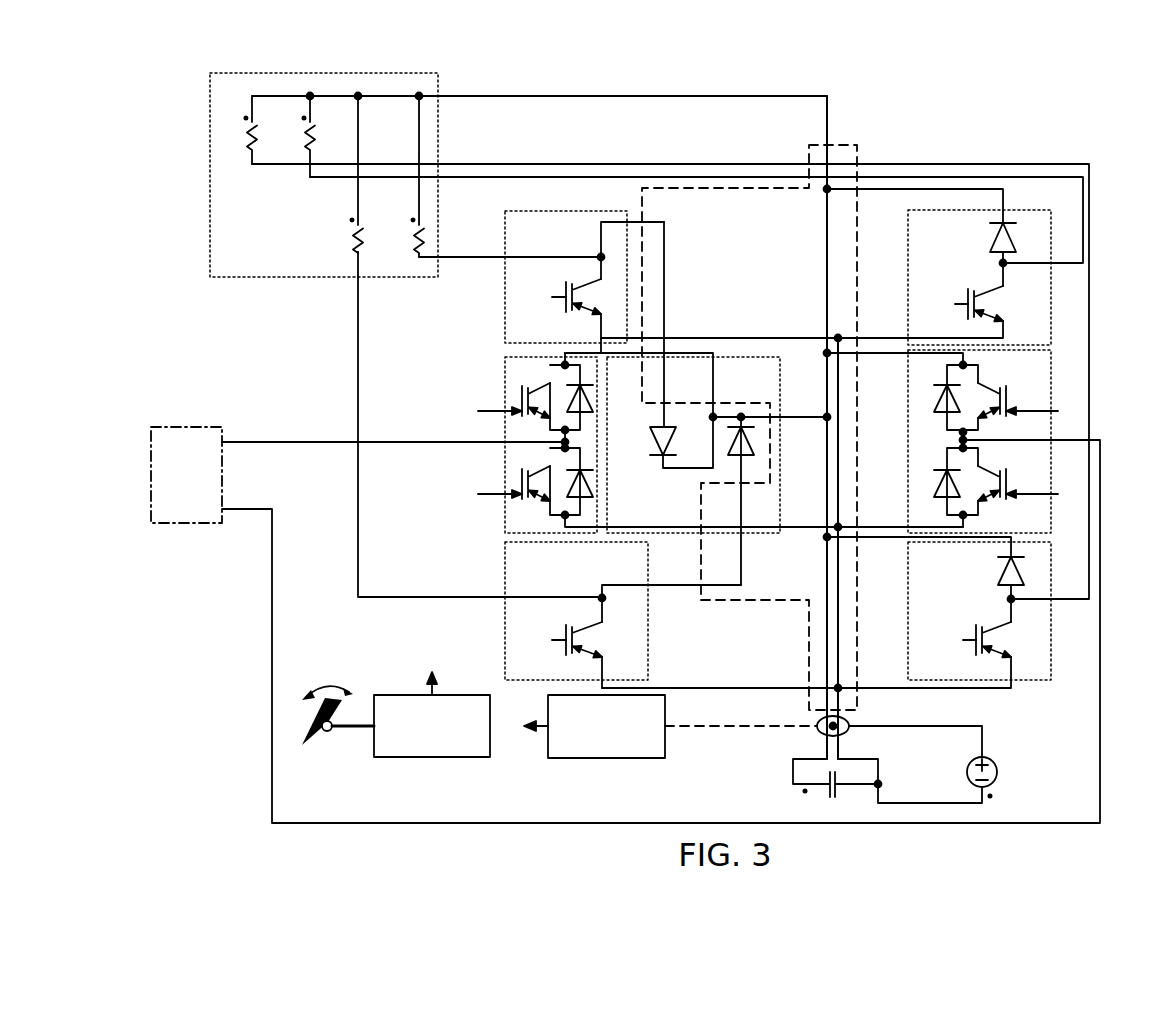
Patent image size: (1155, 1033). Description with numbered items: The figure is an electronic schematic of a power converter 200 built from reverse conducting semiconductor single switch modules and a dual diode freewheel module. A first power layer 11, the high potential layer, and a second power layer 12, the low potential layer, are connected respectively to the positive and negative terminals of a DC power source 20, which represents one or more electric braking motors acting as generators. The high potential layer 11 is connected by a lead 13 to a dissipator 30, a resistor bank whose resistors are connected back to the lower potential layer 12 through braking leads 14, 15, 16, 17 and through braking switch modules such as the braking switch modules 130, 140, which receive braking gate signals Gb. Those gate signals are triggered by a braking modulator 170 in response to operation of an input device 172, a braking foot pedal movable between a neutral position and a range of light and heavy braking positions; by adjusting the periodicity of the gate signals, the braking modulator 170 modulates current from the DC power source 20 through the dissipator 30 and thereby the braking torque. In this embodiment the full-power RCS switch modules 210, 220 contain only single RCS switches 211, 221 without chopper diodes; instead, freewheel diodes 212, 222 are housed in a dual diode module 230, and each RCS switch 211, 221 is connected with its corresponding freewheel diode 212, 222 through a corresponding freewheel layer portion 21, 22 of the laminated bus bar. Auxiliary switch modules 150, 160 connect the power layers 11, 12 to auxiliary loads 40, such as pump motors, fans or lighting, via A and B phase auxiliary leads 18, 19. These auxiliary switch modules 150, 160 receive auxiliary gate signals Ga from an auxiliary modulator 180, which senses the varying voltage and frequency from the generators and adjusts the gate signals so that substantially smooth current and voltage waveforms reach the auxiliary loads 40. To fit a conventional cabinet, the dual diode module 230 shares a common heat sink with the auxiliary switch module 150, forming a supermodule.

The power converter 200 is at (993, 92).
The dissipator 30 is at (208, 94).
The lead 13 is at (518, 95).
The braking lead 17 is at (470, 163).
The braking lead 16 is at (485, 178).
The braking lead 14 is at (452, 256).
The braking lead 15 is at (357, 530).
The A phase auxiliary lead 18 is at (248, 444).
The B phase auxiliary lead 19 is at (242, 511).
The auxiliary loads 40 is at (174, 489).
The full-power RCS switch module 210 is at (561, 239).
The RCS switch 211 is at (552, 282).
The freewheel layer portion 22 is at (667, 254).
The dual diode module 230 is at (698, 439).
The freewheel diode 212 is at (655, 462).
The freewheel diode 222 is at (748, 462).
The auxiliary switch module 150 is at (503, 357).
The auxiliary switch module 160 is at (908, 433).
The braking switch module 130 is at (925, 208).
The braking switch module 140 is at (908, 611).
The full-power RCS switch module 220 is at (623, 615).
The RCS switch 221 is at (544, 613).
The freewheel layer portion 21 is at (623, 588).
The first power layer 11 is at (830, 267).
The second power layer 12 is at (840, 331).
The DC power source 20 is at (1000, 758).
The braking modulator 170 is at (430, 760).
The input device 172 is at (362, 690).
The auxiliary modulator 180 is at (601, 760).